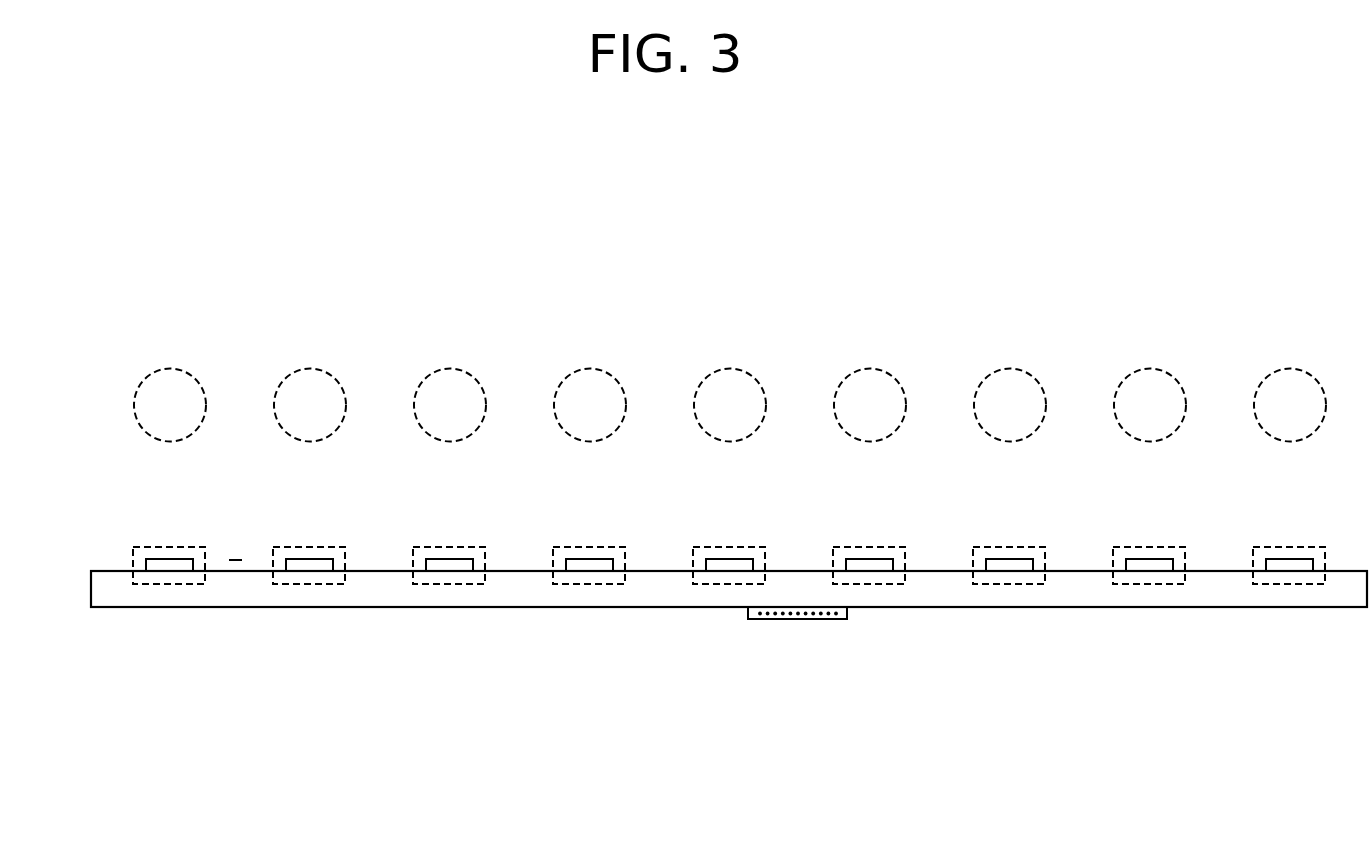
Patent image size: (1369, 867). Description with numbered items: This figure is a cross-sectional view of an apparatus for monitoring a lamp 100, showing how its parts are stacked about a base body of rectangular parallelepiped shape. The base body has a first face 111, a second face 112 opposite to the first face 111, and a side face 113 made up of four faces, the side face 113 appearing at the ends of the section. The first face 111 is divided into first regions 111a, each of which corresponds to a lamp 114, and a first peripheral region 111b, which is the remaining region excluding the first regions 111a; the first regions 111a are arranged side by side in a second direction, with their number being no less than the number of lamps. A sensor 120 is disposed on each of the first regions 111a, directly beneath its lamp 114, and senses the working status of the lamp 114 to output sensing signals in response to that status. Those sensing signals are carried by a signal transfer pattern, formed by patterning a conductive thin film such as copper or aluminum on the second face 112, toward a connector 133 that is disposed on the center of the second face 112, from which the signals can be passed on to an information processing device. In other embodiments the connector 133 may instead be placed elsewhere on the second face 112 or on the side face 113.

The apparatus for monitoring a lamp 100 is at (1037, 627).
The first face 111 is at (661, 571).
The first region 111a is at (155, 547).
The first peripheral region 111b is at (236, 560).
The second face 112 is at (173, 608).
The side face 113 is at (91, 590).
The lamp 114 is at (167, 369).
The sensor 120 is at (183, 567).
The connector 133 is at (800, 620).